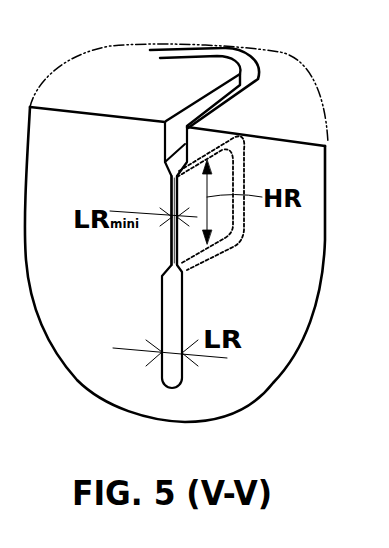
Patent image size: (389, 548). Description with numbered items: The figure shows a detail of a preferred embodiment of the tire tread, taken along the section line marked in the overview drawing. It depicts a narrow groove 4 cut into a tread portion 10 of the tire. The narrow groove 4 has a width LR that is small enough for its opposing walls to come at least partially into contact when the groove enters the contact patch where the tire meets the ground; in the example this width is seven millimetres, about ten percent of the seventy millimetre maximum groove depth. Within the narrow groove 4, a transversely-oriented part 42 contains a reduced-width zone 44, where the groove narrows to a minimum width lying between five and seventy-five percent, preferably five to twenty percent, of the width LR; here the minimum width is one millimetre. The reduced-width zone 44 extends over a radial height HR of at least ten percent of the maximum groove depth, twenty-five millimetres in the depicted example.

The main body 10 is at (97, 77).
The narrow groove 4 is at (248, 70).
The transversely-oriented part 42 is at (192, 112).
The reduced-width zone 44 is at (172, 196).